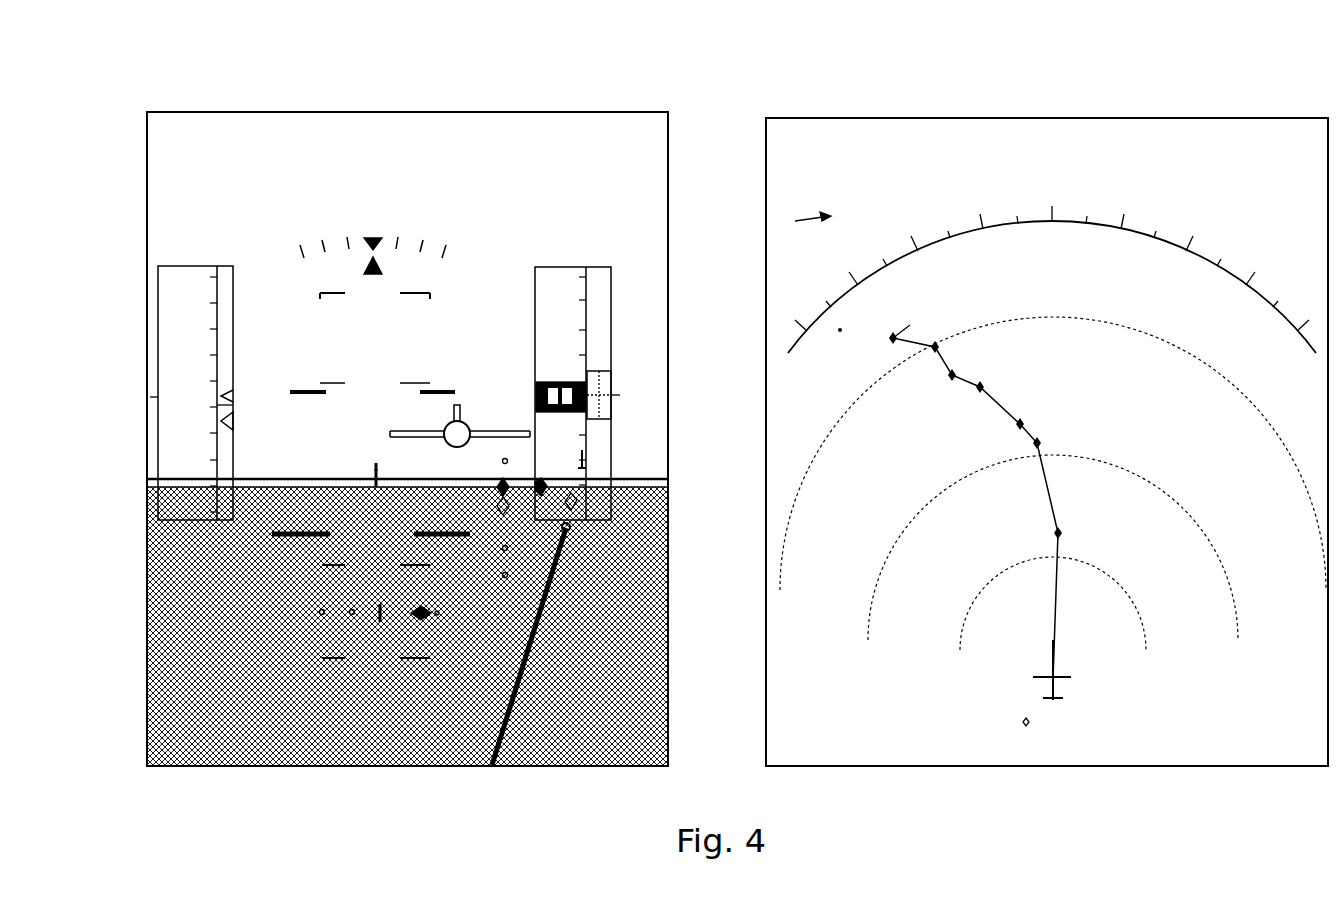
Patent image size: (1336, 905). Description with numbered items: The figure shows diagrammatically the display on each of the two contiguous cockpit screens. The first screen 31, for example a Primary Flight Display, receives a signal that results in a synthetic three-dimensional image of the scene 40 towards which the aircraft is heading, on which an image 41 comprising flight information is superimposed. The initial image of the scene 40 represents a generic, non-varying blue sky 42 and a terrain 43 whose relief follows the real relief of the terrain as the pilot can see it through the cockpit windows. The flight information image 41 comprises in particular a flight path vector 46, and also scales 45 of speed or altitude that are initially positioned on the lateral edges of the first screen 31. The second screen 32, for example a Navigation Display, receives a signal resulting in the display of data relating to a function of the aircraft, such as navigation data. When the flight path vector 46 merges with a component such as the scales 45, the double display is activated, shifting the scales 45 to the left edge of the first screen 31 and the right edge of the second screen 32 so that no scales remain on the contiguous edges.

The first screen 31 is at (487, 110).
The second screen 32 is at (922, 115).
The synthetic three-dimensional image of the scene 40 is at (176, 224).
The image comprising flight information 41 is at (164, 545).
The generic blue sky 42 is at (593, 216).
The terrain 43 is at (548, 703).
The scales of speed or altitude 45 is at (164, 423).
The flight path vector 46 is at (446, 446).